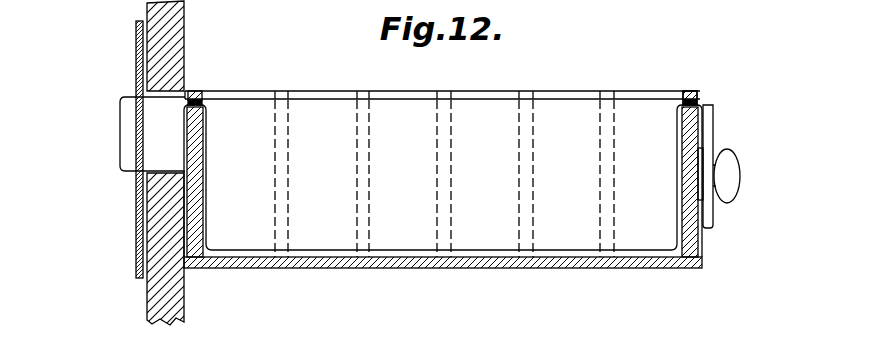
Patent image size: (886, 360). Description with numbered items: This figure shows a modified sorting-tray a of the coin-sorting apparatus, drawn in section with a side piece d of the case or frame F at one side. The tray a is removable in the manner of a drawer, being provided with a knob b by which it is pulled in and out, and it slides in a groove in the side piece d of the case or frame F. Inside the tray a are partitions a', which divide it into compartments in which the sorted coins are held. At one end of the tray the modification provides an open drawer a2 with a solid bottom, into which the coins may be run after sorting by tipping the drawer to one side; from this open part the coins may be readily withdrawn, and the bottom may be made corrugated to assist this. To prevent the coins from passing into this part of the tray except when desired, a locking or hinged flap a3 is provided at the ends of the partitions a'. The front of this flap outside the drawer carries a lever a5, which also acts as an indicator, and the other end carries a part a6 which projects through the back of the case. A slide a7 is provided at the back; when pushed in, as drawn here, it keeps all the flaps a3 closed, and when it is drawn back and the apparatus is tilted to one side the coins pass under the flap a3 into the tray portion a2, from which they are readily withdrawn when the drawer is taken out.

The sorting-tray a is at (455, 164).
The partitions a' is at (444, 156).
The open drawer a2 is at (280, 268).
The locking or hinged flap a3 is at (446, 175).
The lever a5 is at (705, 106).
The projecting part a6 is at (125, 150).
The slide a7 is at (136, 203).
The knob b is at (728, 162).
The side piece d is at (178, 313).
The case or frame F is at (116, 14).